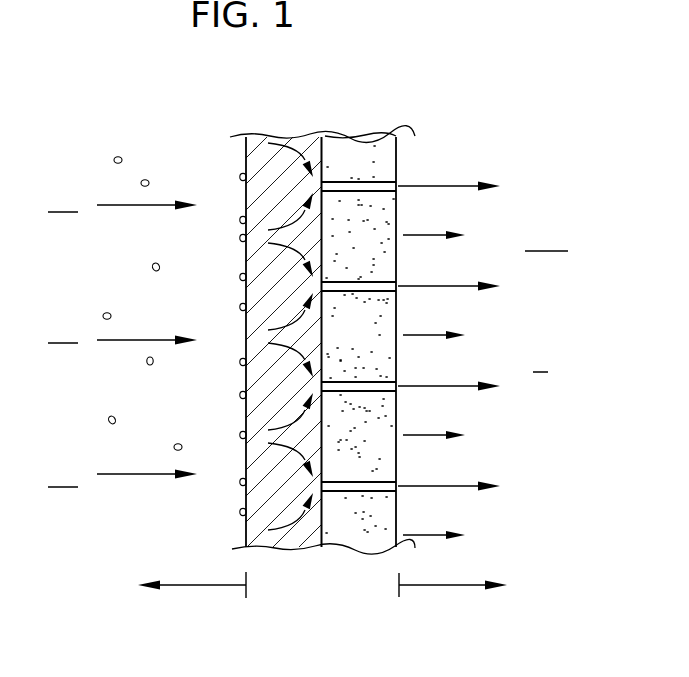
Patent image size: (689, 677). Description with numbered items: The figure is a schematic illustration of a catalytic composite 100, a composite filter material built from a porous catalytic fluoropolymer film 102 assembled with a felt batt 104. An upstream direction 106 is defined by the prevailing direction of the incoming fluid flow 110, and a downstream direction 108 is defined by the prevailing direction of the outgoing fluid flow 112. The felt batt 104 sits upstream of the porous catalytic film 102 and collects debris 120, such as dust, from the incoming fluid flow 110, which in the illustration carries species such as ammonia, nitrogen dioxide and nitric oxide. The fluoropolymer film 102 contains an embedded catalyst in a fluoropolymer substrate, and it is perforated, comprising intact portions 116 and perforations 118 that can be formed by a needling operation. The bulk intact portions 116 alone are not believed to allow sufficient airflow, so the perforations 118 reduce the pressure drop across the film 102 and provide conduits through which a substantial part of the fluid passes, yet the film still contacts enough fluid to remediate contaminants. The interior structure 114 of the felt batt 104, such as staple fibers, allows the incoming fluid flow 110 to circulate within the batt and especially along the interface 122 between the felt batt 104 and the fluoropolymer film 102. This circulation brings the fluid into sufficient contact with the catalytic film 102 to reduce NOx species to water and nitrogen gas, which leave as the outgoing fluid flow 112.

The catalytic composite 100 is at (372, 58).
The porous catalytic fluoropolymer film 102 is at (368, 590).
The felt batt 104 is at (292, 590).
The upstream direction 106 is at (208, 585).
The downstream direction 108 is at (437, 585).
The incoming fluid flow 110 is at (114, 110).
The outgoing fluid flow 112 is at (472, 110).
The interior structure 114 is at (247, 135).
The intact portions 116 is at (380, 134).
The perforations 118 is at (368, 190).
The debris 120 is at (243, 279).
The interface 122 is at (317, 147).